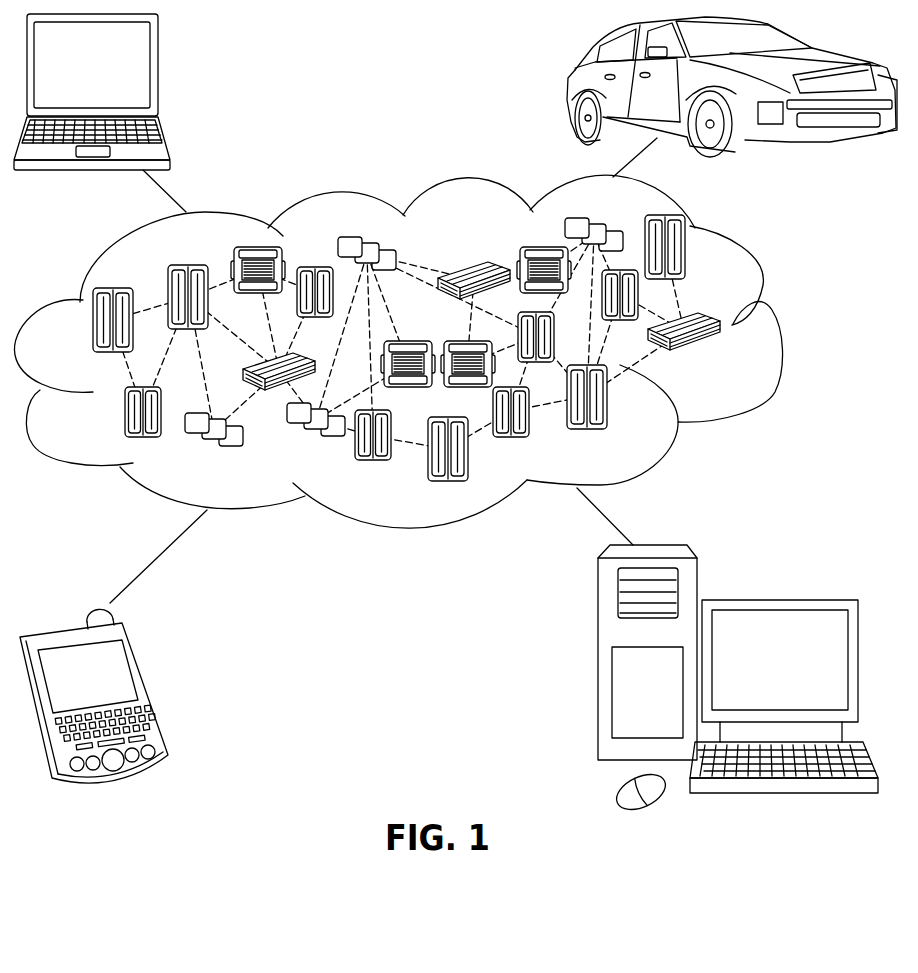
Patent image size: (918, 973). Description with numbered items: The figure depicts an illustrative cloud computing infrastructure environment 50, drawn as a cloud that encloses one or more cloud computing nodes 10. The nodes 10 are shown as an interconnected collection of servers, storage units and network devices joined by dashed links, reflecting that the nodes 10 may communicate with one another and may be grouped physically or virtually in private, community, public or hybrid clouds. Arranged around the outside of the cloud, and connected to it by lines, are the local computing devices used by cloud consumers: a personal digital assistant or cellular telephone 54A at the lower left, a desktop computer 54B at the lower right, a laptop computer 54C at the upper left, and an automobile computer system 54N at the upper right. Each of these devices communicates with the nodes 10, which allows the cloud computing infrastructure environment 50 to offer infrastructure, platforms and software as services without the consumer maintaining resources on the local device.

The cloud computing node 10 is at (455, 348).
The cloud computing infrastructure environment 50 is at (778, 328).
The personal digital assistant or cellular telephone 54A is at (150, 687).
The desktop computer 54B is at (775, 597).
The laptop computer 54C is at (158, 72).
The automobile computer system 54N is at (570, 90).